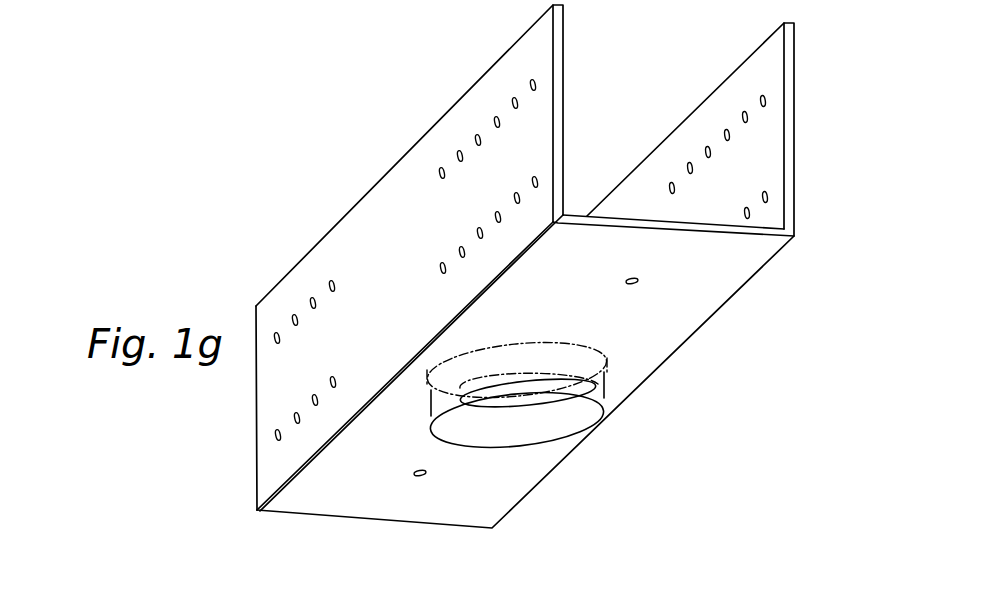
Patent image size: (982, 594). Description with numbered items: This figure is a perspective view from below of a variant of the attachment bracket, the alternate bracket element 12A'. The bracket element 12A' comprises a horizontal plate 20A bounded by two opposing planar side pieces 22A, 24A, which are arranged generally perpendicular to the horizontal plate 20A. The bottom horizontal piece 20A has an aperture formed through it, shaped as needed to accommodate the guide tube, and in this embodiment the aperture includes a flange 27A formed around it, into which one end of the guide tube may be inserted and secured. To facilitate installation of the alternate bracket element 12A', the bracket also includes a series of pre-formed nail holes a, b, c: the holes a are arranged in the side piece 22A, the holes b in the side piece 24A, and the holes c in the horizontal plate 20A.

The alternate bracket element 12A' is at (547, 266).
The horizontal plate 20A is at (525, 375).
The planar side piece 22A is at (732, 129).
The planar side piece 24A is at (377, 258).
The flange 27A is at (582, 395).
The pre-formed nail holes a is at (742, 115).
The pre-formed nail holes b is at (329, 284).
The pre-formed nail holes c is at (560, 387).